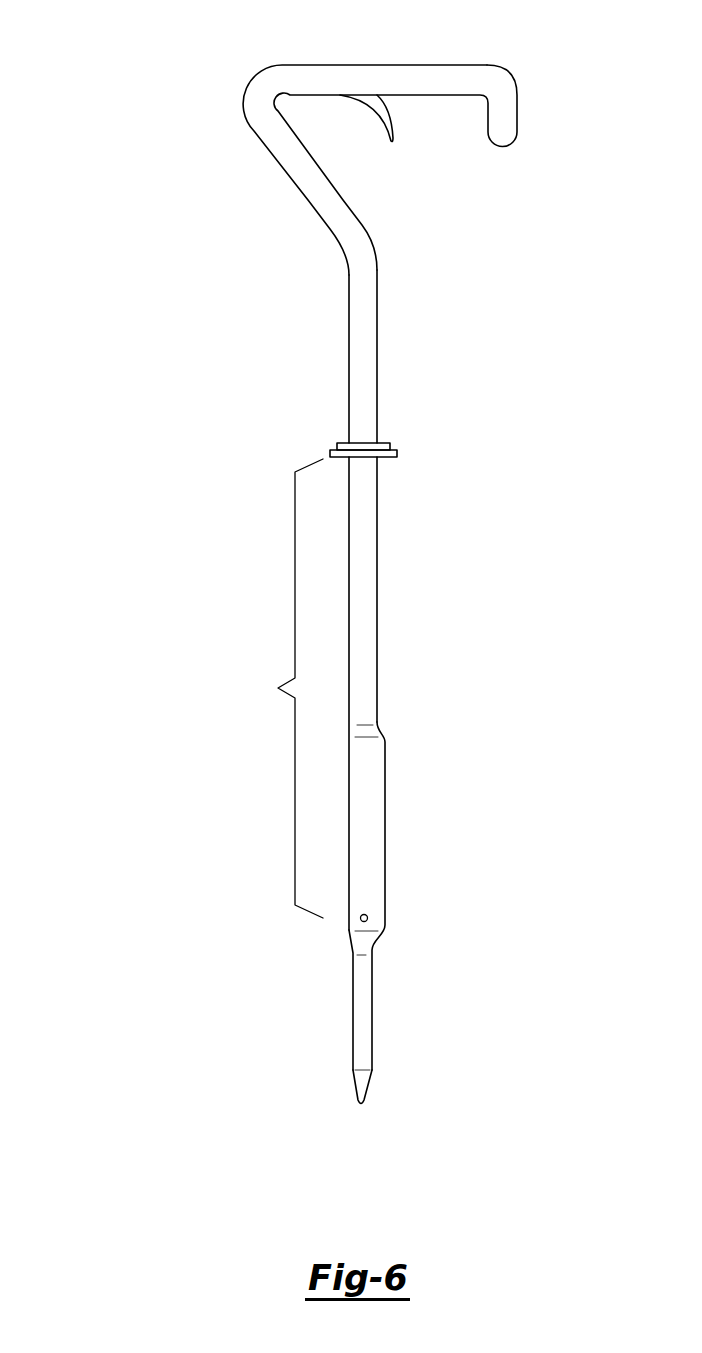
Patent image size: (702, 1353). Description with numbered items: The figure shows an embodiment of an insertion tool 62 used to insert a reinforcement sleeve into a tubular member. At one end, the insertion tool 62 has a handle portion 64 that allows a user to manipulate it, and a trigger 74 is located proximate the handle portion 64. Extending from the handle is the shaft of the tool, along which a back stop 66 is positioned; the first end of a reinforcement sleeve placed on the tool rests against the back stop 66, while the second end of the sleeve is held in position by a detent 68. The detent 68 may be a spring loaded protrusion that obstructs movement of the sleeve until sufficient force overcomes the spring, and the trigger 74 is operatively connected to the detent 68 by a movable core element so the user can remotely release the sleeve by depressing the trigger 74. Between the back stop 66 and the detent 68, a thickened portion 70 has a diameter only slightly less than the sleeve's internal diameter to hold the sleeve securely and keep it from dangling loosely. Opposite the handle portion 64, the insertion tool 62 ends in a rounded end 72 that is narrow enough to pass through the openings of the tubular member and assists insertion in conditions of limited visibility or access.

The insertion tool 62 is at (150, 452).
The handle portion 64 is at (440, 83).
The back stop 66 is at (397, 455).
The detent 68 is at (367, 918).
The thickened portion 70 is at (408, 737).
The rounded end 72 is at (361, 1106).
The trigger 74 is at (365, 112).